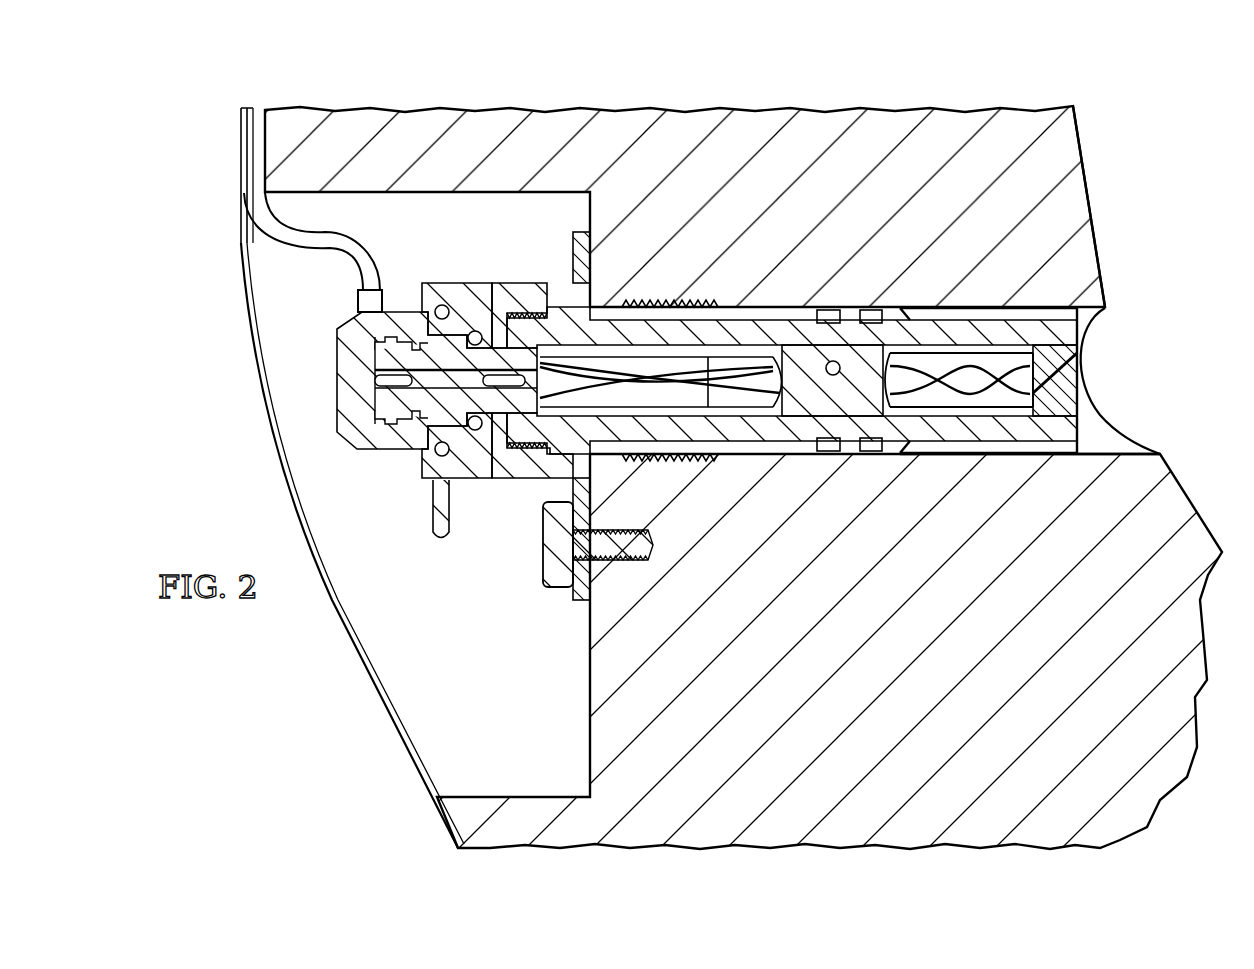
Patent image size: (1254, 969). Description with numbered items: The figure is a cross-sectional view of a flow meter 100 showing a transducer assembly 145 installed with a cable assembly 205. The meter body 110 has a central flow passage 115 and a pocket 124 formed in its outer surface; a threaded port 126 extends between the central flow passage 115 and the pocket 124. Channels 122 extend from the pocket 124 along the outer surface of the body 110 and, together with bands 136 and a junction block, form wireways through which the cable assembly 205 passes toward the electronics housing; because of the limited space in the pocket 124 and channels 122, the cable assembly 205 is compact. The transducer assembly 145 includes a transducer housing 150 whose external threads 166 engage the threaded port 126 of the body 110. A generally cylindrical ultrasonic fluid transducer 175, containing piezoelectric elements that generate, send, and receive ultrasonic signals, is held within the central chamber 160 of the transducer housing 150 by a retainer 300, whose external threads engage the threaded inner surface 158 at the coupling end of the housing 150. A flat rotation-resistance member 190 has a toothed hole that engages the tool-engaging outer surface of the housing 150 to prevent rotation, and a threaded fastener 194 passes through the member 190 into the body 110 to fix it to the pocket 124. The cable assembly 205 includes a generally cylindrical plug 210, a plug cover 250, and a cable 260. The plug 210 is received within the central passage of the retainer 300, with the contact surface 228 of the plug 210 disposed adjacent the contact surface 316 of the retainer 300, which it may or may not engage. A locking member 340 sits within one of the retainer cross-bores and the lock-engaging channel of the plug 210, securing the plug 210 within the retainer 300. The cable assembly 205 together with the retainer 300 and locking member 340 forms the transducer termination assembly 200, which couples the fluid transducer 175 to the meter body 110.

The flow meter 100 is at (262, 88).
The body 110 is at (800, 198).
The central flow passage 115 is at (1087, 192).
The channels 122 is at (250, 135).
The pocket 124 is at (498, 680).
The threaded port 126 is at (1090, 455).
The band 136 is at (393, 730).
The transducer assembly 145 is at (1102, 334).
The transducer housing 150 is at (1058, 445).
The threaded inner surface 158 is at (533, 310).
The central chamber 160 is at (672, 350).
The external threads 166 is at (678, 462).
The fluid transducer 175 is at (800, 368).
The rotation-resistance member 190 is at (580, 600).
The threaded fastener 194 is at (553, 590).
The transducer termination assembly 200 is at (118, 420).
The cable assembly 205 is at (228, 386).
The plug 210 is at (383, 440).
The contact surface 228 is at (477, 480).
The plug cover 250 is at (335, 400).
The cable 260 is at (318, 244).
The retainer 300 is at (438, 283).
The contact surface 316 is at (458, 380).
The locking member 340 is at (432, 525).